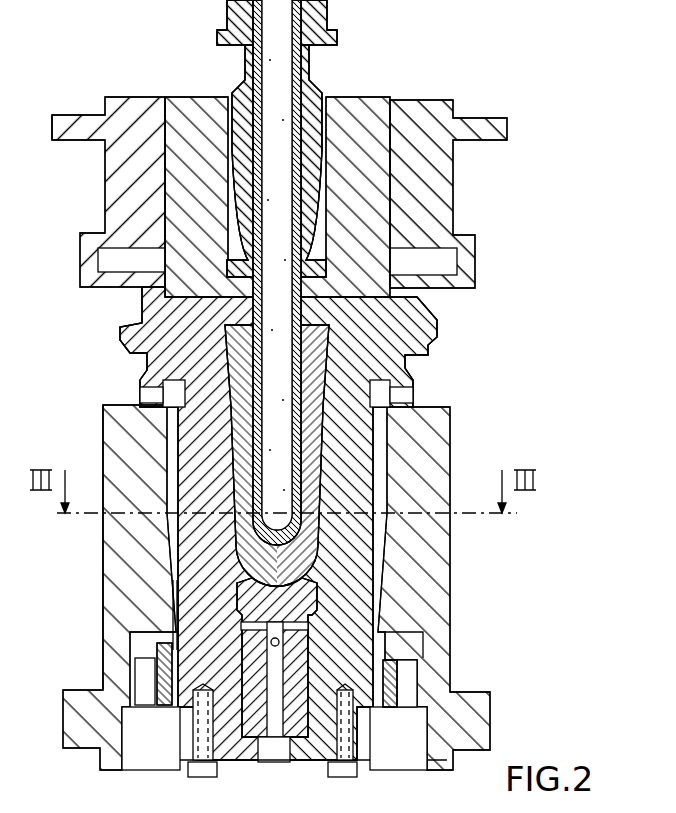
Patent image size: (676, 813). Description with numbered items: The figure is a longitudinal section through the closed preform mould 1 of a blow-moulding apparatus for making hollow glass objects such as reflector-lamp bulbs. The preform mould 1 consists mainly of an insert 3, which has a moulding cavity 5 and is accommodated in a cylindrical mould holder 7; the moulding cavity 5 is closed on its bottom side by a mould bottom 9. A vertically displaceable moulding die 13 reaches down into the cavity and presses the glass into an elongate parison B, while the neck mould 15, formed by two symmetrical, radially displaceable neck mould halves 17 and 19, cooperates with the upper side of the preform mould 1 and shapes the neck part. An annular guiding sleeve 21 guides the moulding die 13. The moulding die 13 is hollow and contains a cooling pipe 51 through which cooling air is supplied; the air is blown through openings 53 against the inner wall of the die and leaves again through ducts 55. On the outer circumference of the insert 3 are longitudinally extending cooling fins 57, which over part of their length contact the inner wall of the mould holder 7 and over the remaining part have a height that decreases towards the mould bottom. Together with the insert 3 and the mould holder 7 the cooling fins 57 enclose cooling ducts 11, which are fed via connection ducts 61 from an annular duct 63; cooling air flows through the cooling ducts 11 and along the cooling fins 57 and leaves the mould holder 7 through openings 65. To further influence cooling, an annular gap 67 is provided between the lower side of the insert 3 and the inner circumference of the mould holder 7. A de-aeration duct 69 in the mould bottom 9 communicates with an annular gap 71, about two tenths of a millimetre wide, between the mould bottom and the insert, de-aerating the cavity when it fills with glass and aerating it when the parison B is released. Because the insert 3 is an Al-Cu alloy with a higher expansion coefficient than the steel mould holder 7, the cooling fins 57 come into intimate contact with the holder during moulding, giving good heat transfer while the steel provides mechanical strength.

The preform mould 1 is at (102, 542).
The insert 3 is at (360, 545).
The moulding cavity 5 is at (315, 372).
The mould holder 7 is at (430, 438).
The mould bottom 9 is at (237, 748).
The cooling ducts 11 is at (173, 448).
The moulding die 13 is at (333, 40).
The neck mould 15 is at (100, 302).
The neck mould half 17 is at (443, 197).
The neck mould half 19 is at (105, 207).
The guiding sleeve 21 is at (370, 98).
The cooling pipe 51 is at (262, 61).
The openings 53 is at (290, 478).
The ducts 55 is at (236, 20).
The cooling fins 57 is at (173, 612).
The connection ducts 61 is at (145, 670).
The annular duct 63 is at (145, 757).
The openings 65 is at (140, 393).
The annular gap 67 is at (353, 713).
The de-aeration duct 69 is at (278, 757).
The annular gap 71 is at (417, 643).
The parison B is at (318, 563).